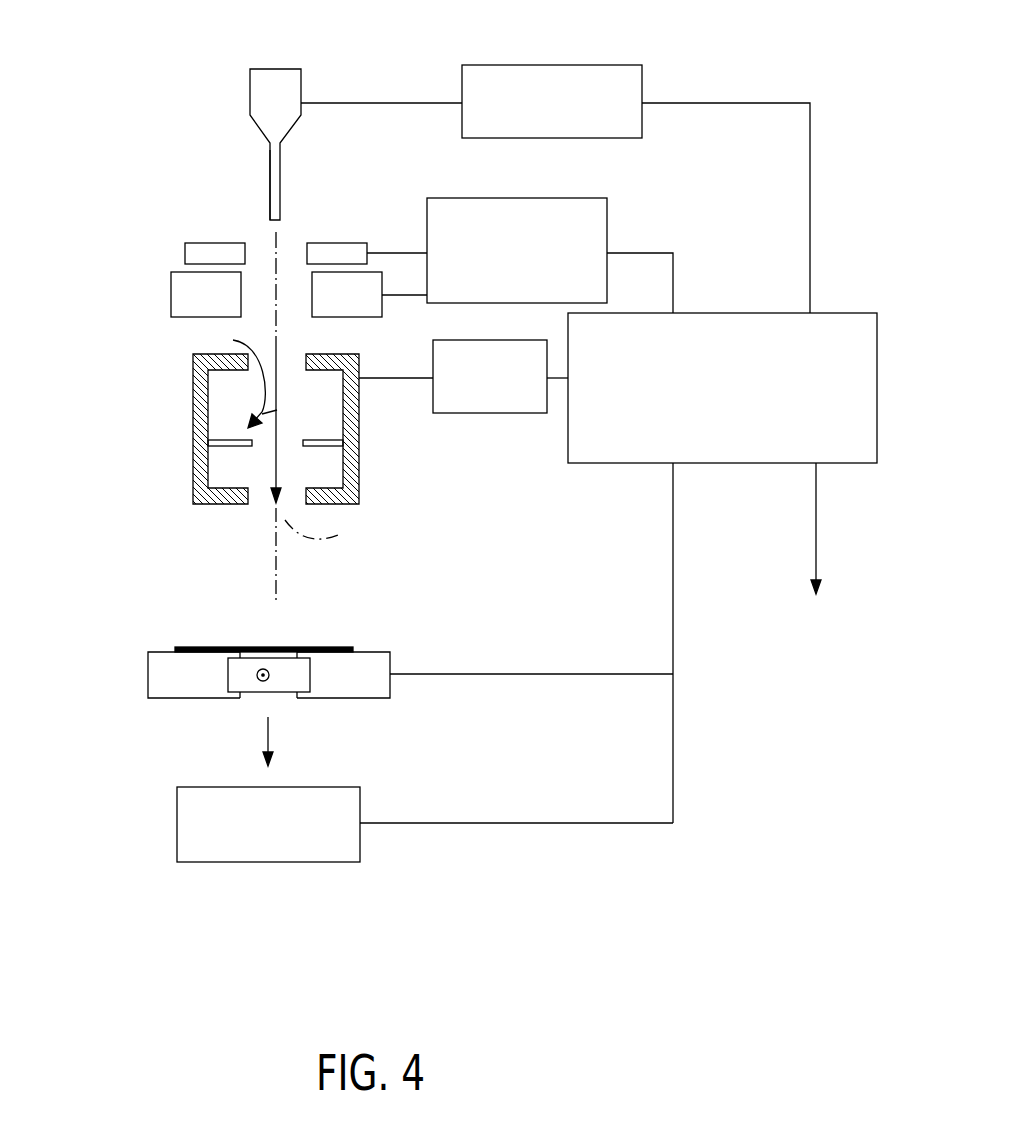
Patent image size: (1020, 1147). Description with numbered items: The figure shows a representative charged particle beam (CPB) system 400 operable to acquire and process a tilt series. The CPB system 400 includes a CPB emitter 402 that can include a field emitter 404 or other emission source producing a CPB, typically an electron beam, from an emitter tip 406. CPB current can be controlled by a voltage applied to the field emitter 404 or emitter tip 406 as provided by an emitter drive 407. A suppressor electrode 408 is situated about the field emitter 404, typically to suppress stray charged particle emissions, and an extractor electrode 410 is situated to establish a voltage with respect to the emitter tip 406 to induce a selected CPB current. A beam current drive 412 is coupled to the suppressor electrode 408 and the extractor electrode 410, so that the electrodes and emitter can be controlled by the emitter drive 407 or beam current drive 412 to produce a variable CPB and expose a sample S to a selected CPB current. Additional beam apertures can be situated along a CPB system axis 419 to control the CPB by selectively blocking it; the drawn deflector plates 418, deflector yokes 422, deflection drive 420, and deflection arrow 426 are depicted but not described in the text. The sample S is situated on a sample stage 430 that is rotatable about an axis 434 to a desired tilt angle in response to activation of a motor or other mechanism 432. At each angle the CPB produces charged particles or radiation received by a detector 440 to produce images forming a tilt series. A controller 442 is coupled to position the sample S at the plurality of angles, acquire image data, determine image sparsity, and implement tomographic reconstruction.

The CPB system 400 is at (660, 978).
The CPB emitter 402 is at (162, 81).
The field emitter 404 is at (280, 183).
The emitter tip 406 is at (272, 218).
The emitter drive 407 is at (598, 62).
The suppressor electrode 408 is at (183, 245).
The extractor electrode 410 is at (170, 292).
The beam current drive 412 is at (607, 203).
The deflector plate 418 is at (322, 443).
The CPB system axis 419 is at (342, 532).
The deflection drive 420 is at (490, 413).
The deflector 422 is at (359, 430).
The beam deflection direction 426 is at (227, 377).
The sample stage 430 is at (193, 698).
The motor or other mechanism 432 is at (292, 698).
The axis 434 is at (269, 672).
The sample S is at (208, 650).
The detector 440 is at (288, 859).
The controller 442 is at (842, 313).